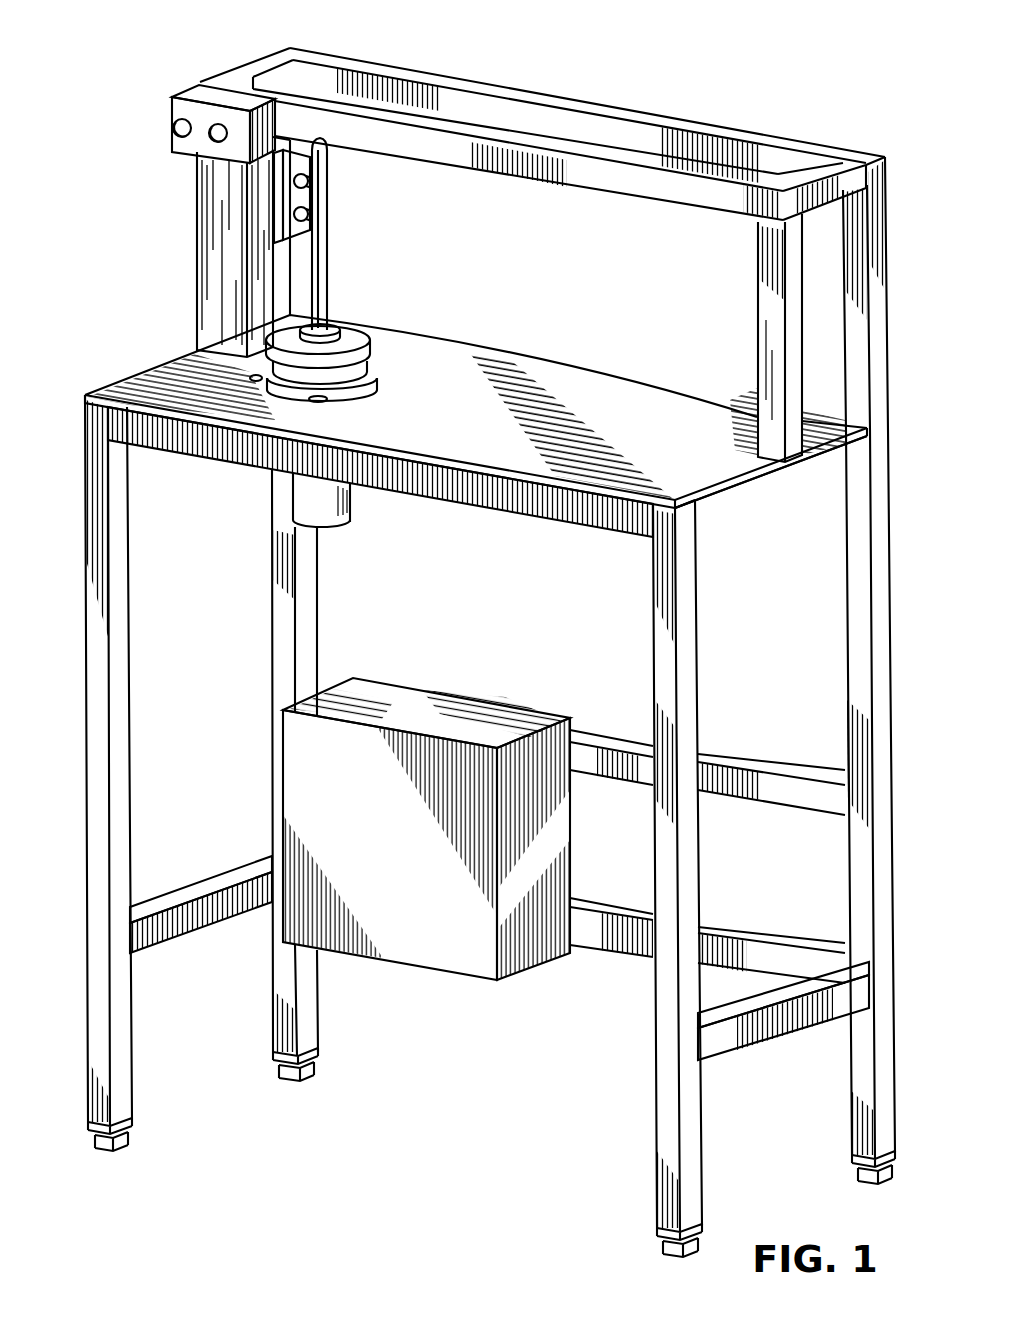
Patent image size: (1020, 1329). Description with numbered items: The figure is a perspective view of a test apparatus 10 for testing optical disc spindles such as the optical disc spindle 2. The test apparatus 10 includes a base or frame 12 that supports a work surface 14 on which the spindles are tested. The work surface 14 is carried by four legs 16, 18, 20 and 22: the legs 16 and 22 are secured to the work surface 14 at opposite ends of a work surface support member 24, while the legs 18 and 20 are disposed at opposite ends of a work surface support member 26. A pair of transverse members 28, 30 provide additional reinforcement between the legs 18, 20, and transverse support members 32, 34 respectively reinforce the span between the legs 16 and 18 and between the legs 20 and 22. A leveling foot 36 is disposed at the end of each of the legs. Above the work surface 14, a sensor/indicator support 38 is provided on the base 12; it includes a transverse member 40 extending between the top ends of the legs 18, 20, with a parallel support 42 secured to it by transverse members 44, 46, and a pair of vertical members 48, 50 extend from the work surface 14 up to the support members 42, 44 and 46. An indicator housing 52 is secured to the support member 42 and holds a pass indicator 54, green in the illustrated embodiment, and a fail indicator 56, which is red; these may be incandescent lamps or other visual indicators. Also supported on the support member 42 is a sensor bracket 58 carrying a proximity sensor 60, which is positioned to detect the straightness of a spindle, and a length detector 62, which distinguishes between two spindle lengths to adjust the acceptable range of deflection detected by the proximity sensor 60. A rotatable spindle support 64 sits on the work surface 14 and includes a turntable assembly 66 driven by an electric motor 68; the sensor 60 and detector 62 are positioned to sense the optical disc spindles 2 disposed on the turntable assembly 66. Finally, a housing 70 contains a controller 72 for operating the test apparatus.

The test apparatus 10 is at (633, 78).
The base or frame 12 is at (80, 600).
The work surface 14 is at (470, 428).
The leg 16 is at (694, 554).
The leg 18 is at (877, 487).
The leg 20 is at (311, 655).
The leg 22 is at (127, 592).
The work surface support member 24 is at (439, 498).
The work surface support member 26 is at (830, 462).
The transverse member 28 is at (742, 757).
The transverse member 30 is at (732, 931).
The transverse support member 32 is at (771, 1031).
The transverse support member 34 is at (168, 932).
The leveling foot 36 is at (690, 1240).
The sensor/indicator support 38 is at (679, 119).
The transverse member 40 is at (486, 84).
The parallel support 42 is at (470, 166).
The transverse member 44 is at (839, 166).
The transverse member 46 is at (267, 62).
The vertical member 48 is at (764, 362).
The vertical member 50 is at (205, 233).
The indicator housing 52 is at (189, 96).
The pass indicator 54 is at (170, 120).
The fail indicator 56 is at (215, 124).
The sensor bracket 58 is at (310, 152).
The proximity sensor 60 is at (316, 216).
The length detector 62 is at (316, 187).
The optical disc spindle 2 is at (322, 266).
The rotatable spindle support 64 is at (355, 311).
The turntable assembly 66 is at (375, 383).
The electric motor 68 is at (333, 527).
The housing 70 is at (437, 703).
The controller 72 is at (430, 950).